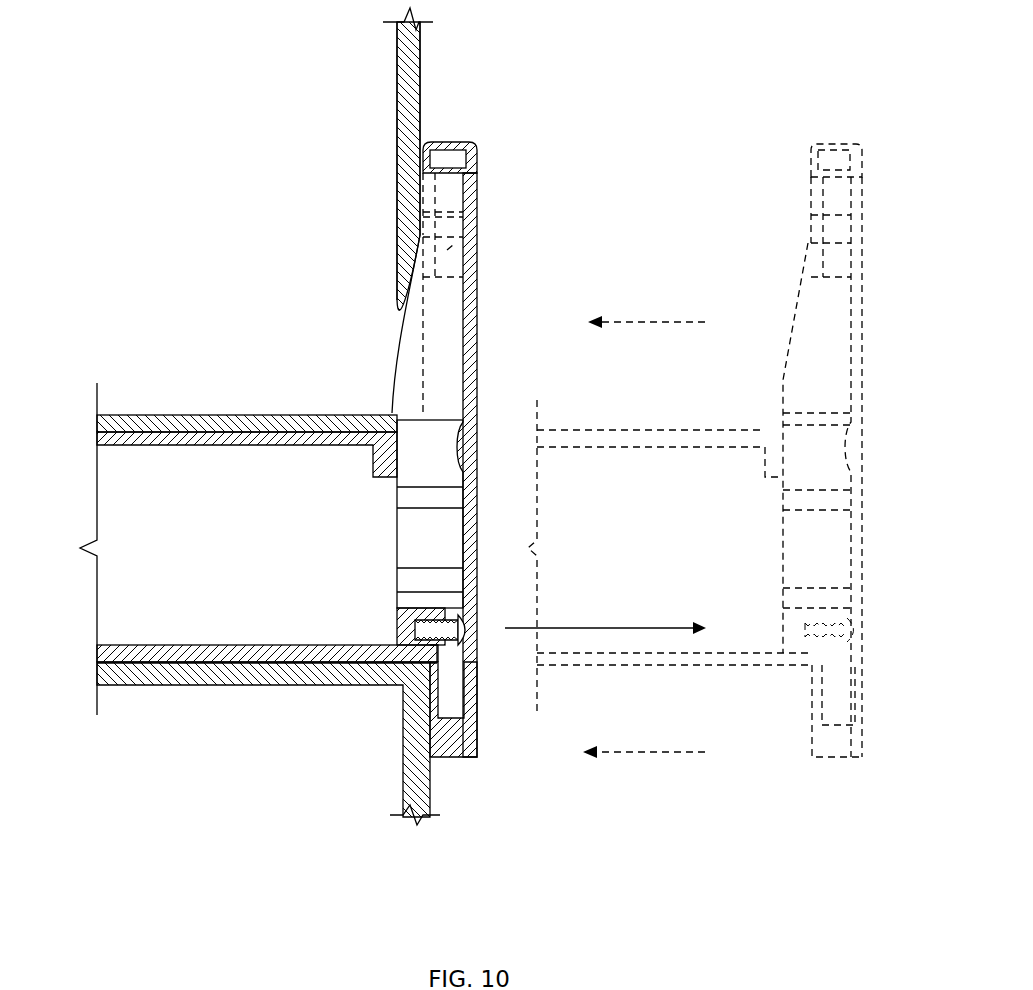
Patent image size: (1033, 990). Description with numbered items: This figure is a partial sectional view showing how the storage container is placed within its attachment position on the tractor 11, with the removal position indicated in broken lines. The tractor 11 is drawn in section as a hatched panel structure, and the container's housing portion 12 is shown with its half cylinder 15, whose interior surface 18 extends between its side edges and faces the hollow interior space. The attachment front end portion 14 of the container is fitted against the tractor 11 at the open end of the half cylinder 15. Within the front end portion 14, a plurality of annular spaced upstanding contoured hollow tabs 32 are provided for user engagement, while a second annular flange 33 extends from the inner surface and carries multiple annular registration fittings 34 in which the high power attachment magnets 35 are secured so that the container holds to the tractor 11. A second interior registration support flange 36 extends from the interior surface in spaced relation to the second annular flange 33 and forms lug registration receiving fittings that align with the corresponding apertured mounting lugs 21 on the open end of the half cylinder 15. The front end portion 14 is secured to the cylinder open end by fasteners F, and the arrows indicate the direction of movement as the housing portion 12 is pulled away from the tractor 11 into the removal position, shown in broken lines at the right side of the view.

The tractor 11 is at (421, 76).
The housing portion 12 is at (640, 680).
The front end portion 14 is at (620, 417).
The half cylinder 15 is at (158, 663).
The interior surface 18 is at (180, 519).
The mounting lugs 21 is at (398, 623).
The hollow tabs 32 is at (447, 141).
The second annular flange 33 is at (445, 306).
The registration fittings 34 is at (480, 252).
The attachment magnets 35 is at (417, 258).
The interior registration support flange 36 is at (425, 520).
The fasteners F is at (478, 646).